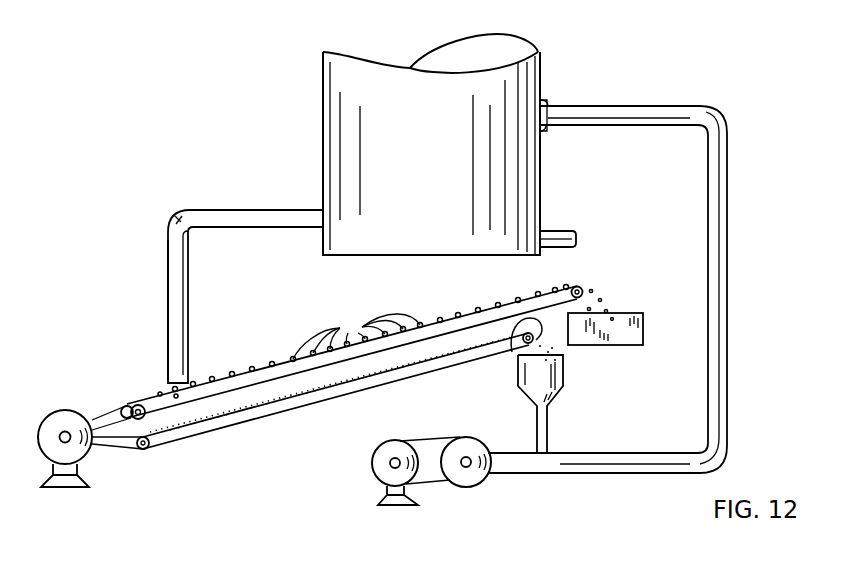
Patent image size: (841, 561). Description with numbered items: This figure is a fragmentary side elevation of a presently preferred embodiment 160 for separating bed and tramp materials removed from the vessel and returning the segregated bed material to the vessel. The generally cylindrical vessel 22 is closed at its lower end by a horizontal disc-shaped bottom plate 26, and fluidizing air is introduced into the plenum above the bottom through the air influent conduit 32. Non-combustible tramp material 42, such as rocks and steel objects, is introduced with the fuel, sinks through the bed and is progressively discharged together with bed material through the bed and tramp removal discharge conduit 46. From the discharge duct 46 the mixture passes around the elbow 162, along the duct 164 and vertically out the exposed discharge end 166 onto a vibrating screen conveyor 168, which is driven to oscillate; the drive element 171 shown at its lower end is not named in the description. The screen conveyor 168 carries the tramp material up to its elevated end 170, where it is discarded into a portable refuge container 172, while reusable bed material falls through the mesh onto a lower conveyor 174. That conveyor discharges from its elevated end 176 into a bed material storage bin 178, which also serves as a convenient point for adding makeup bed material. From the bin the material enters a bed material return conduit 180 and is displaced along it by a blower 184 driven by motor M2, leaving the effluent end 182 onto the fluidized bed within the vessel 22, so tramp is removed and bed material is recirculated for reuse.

The vessel 22 is at (415, 184).
The bottom plate 26 is at (352, 257).
The air influent conduit 32 is at (548, 232).
The tramp material 42 is at (356, 336).
The bed and tramp removal discharge conduit 46 is at (245, 296).
The segregating embodiment 160 is at (560, 51).
The elbow 162 is at (178, 221).
The duct 164 is at (178, 293).
The exposed discharge end 166 is at (174, 396).
The vibrating screen conveyor 168 is at (270, 367).
The elevated end 170 is at (580, 289).
The conveyor motor 171 is at (40, 412).
The portable refuge container 172 is at (645, 322).
The lower conveyor 174 is at (398, 382).
The elevated end 176 is at (523, 343).
The bed material storage bin 178 is at (564, 368).
The bed material return conduit 180 is at (644, 112).
The effluent end 182 is at (546, 104).
The blower 184 is at (474, 481).
The motor M2 is at (384, 452).